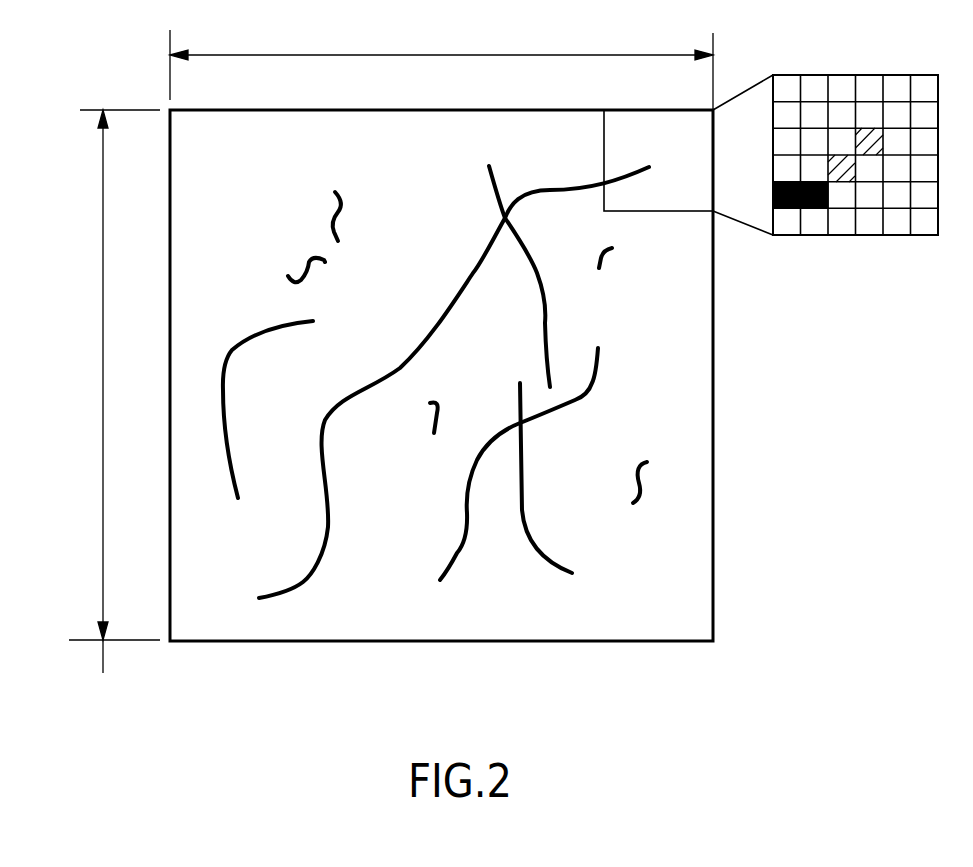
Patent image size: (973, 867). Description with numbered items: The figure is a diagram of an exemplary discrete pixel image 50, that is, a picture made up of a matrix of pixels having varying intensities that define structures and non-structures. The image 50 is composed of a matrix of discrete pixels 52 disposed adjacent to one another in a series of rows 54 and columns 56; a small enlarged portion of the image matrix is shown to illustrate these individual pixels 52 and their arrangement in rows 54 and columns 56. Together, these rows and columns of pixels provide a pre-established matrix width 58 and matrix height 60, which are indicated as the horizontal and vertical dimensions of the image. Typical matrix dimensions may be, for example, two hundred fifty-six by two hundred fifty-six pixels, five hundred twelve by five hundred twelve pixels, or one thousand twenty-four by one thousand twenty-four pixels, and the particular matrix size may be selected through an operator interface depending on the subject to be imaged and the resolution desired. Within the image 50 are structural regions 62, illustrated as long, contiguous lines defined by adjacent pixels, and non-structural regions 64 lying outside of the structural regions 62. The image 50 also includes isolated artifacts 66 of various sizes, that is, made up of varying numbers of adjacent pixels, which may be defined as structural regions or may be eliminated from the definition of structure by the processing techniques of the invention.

The image 50 is at (782, 442).
The discrete pixels 52 is at (868, 197).
The rows 54 is at (773, 100).
The columns 56 is at (843, 75).
The matrix width 58 is at (398, 55).
The matrix height 60 is at (103, 410).
The structural regions 62 is at (457, 553).
The non-structural regions 64 is at (697, 385).
The isolated artifacts 66 is at (335, 212).